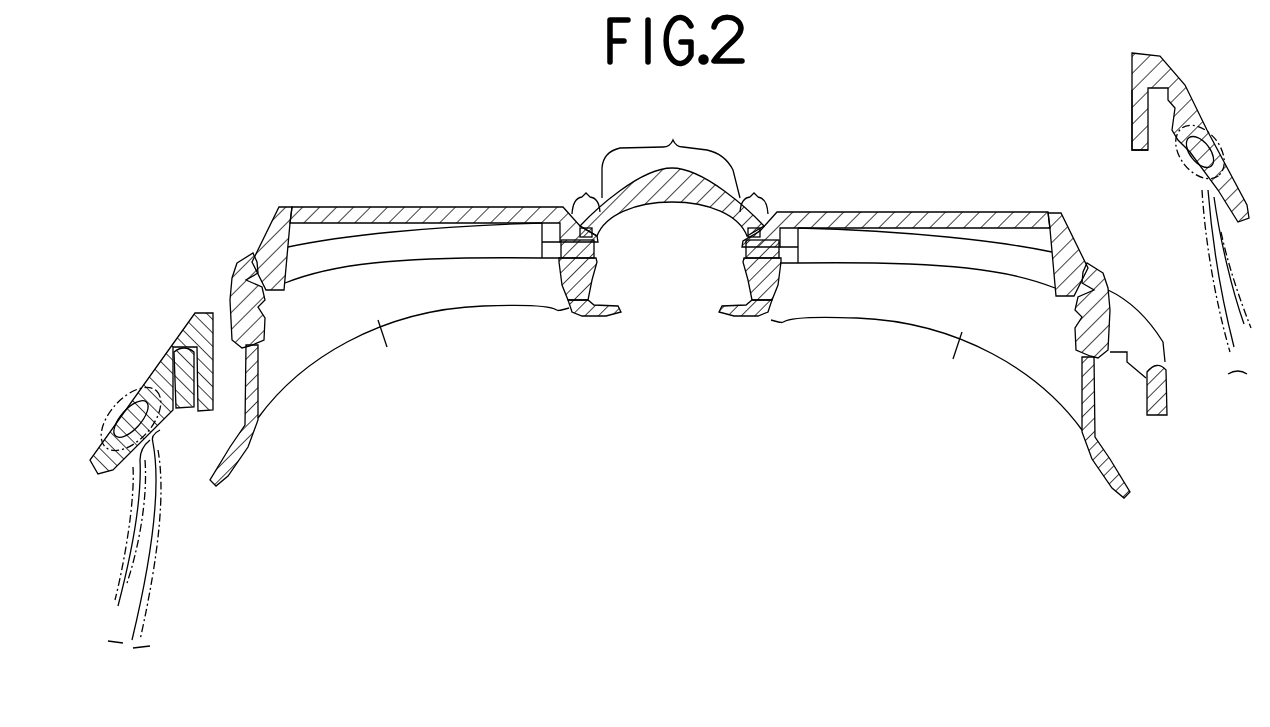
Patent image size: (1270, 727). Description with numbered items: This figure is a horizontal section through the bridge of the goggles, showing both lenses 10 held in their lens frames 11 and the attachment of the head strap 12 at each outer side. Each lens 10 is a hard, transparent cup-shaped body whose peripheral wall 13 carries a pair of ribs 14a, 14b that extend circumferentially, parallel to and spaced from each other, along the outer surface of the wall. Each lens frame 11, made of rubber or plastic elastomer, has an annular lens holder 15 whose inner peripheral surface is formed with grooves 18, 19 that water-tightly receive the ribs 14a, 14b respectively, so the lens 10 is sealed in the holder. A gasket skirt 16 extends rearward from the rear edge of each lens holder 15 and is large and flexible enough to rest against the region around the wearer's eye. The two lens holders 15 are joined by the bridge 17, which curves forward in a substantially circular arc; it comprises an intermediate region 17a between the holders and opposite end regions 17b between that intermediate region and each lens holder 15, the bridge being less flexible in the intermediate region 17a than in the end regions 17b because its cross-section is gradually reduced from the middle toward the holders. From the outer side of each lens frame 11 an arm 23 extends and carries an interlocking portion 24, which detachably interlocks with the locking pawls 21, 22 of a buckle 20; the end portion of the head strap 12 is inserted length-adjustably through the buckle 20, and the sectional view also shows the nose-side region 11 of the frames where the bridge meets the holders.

The lens 10 is at (430, 203).
The lens frame 11 is at (594, 328).
The head strap 12 is at (158, 532).
The peripheral wall 13 is at (277, 222).
The rib 14a is at (556, 239).
The rib 14b is at (568, 263).
The lens holder 15 is at (258, 333).
The gasket skirt 16 is at (670, 367).
The bridge 17 is at (670, 201).
The intermediate region 17a is at (671, 153).
The end region 17b is at (673, 190).
The groove 18 is at (595, 232).
The groove 19 is at (592, 257).
The buckle 20 is at (152, 363).
The locking pawl 21 is at (1132, 136).
The locking pawl 22 is at (1167, 153).
The arm 23 is at (227, 290).
The interlocking portion 24 is at (180, 362).